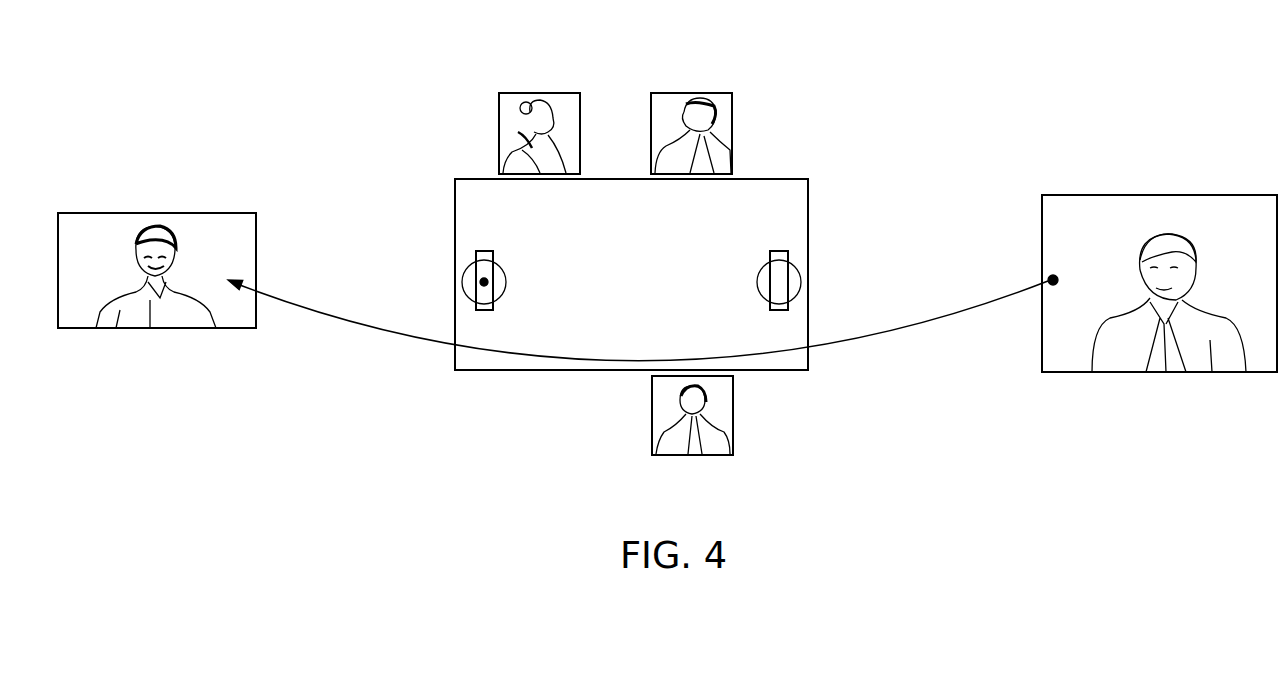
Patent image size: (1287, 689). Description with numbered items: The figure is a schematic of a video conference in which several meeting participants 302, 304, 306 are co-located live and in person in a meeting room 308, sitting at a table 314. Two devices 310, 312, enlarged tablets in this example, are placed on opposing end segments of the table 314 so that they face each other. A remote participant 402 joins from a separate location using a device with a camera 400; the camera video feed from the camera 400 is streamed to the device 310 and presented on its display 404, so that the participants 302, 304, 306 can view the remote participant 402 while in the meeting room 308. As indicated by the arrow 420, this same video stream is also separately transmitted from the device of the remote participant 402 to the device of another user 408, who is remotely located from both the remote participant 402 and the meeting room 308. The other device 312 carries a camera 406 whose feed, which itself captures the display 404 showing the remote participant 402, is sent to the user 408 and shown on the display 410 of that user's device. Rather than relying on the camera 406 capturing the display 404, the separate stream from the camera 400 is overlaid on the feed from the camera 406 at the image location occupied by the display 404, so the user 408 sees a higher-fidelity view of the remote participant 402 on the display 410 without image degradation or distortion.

The meeting room 308 is at (143, 80).
The meeting participant 302 is at (540, 92).
The meeting participant 304 is at (694, 92).
The meeting participant 306 is at (651, 413).
The device 310 is at (770, 255).
The device 312 is at (494, 255).
The table 314 is at (808, 192).
The camera 400 is at (1045, 280).
The remote participant 402 is at (1158, 193).
The display 404 is at (788, 303).
The camera 406 is at (472, 280).
The user 408 is at (158, 225).
The display 410 is at (282, 263).
The arrow 420 is at (410, 336).